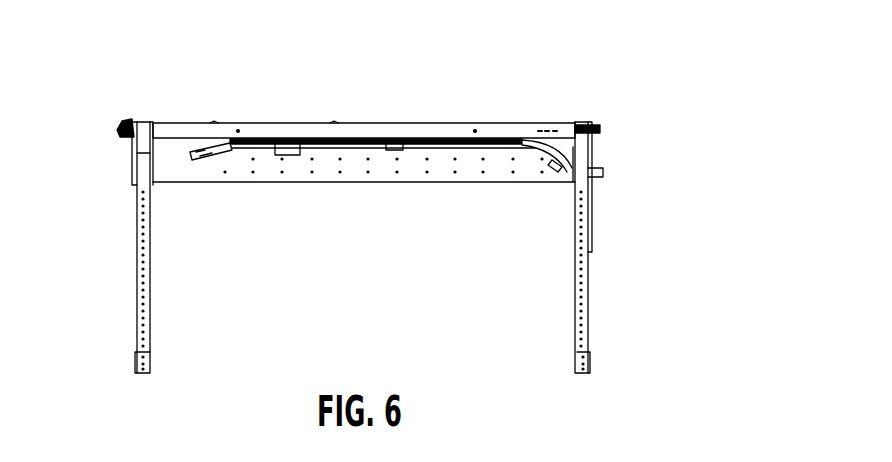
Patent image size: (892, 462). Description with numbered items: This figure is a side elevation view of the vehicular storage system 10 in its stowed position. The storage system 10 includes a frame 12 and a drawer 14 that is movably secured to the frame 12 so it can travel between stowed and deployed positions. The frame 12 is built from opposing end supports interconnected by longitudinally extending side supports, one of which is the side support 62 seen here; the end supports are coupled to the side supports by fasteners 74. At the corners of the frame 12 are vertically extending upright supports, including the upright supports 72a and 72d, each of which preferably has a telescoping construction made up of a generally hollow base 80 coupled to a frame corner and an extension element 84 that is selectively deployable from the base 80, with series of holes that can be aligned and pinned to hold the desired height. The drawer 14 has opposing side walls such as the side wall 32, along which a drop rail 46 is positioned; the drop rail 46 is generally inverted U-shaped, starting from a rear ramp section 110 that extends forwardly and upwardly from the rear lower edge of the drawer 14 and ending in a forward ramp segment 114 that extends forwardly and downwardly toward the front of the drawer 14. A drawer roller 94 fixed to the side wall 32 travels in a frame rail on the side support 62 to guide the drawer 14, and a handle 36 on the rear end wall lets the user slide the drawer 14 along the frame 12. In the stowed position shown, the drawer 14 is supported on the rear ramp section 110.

The vehicular storage system 10 is at (569, 70).
The frame 12 is at (392, 215).
The drawer 14 is at (291, 203).
The side wall 32 is at (388, 139).
The handle 36 is at (603, 173).
The drop rail 46 is at (422, 139).
The side support 62 is at (331, 122).
The upright support 72a is at (592, 252).
The upright support 72d is at (150, 270).
The fastener 74 is at (583, 121).
The hollow base 80 is at (150, 320).
The extension element 84 is at (150, 365).
The drawer roller 94 is at (117, 130).
The rear ramp section 110 is at (547, 141).
The forward ramp segment 114 is at (194, 158).